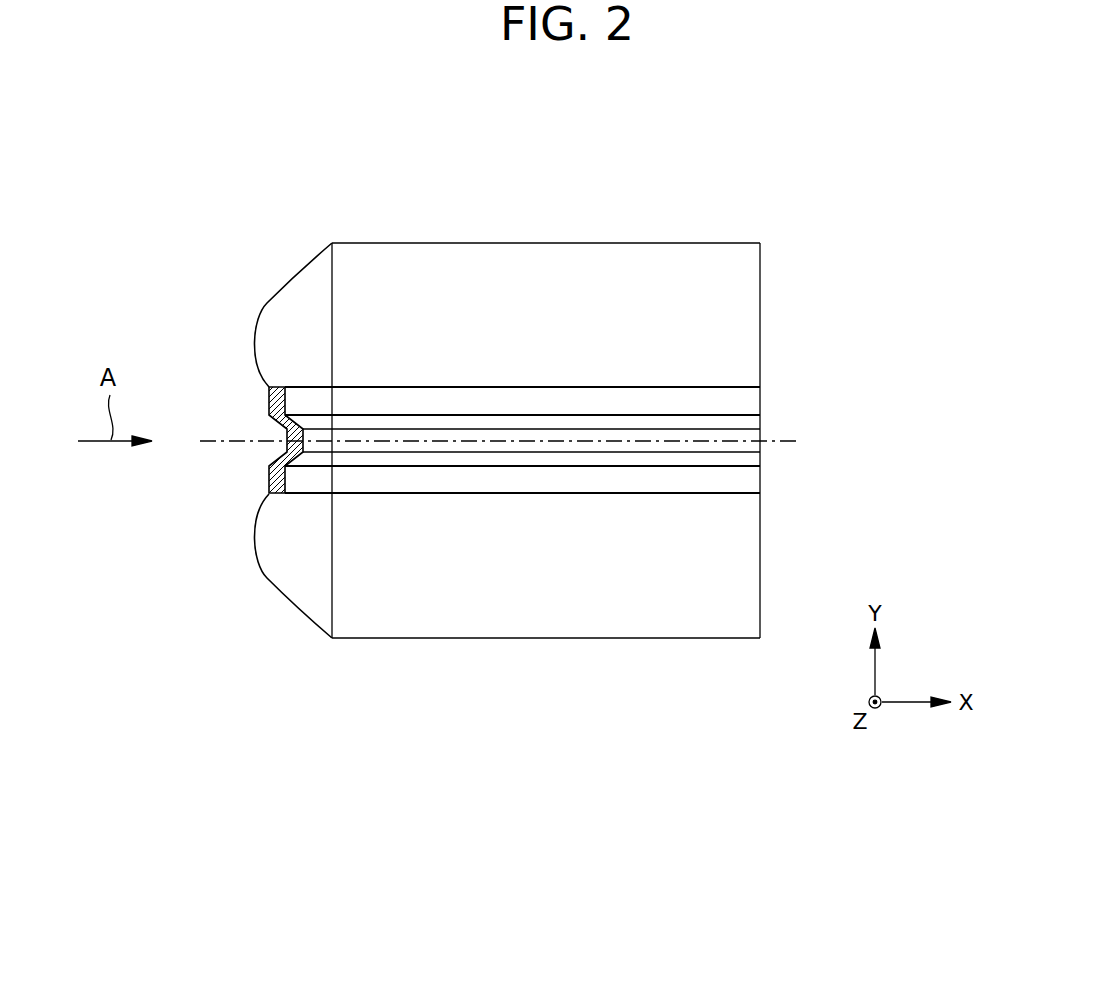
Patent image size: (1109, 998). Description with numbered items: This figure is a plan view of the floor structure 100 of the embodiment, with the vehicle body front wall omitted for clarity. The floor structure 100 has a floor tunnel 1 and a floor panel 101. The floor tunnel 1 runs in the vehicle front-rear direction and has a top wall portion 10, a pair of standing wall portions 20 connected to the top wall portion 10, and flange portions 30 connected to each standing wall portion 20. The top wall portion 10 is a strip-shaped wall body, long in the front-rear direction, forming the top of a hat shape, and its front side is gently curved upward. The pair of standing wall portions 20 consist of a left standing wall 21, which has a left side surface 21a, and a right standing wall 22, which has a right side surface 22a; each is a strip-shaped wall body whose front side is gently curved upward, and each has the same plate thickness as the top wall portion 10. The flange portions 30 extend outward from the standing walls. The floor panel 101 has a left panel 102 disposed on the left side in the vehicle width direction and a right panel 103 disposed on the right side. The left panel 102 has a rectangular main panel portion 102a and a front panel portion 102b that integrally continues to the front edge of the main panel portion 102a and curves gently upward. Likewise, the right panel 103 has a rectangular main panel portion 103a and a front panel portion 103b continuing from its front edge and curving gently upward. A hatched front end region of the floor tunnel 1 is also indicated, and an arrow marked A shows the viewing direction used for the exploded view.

The floor structure 100 is at (808, 172).
The floor panel 101 is at (442, 255).
The left panel 102 is at (507, 615).
The main panel portion 102a is at (625, 610).
The front panel portion 102b is at (307, 560).
The right panel 103 is at (538, 296).
The main panel portion 103a is at (657, 265).
The front panel portion 103b is at (288, 315).
The floor tunnel 1 is at (534, 451).
The top wall portion 10 is at (510, 433).
The pair of standing wall portions 20 is at (522, 451).
The left standing wall 21 is at (522, 530).
The left side surface 21a is at (522, 534).
The right standing wall 22 is at (522, 362).
The right side surface 22a is at (440, 424).
The flange portions 30 is at (653, 458).